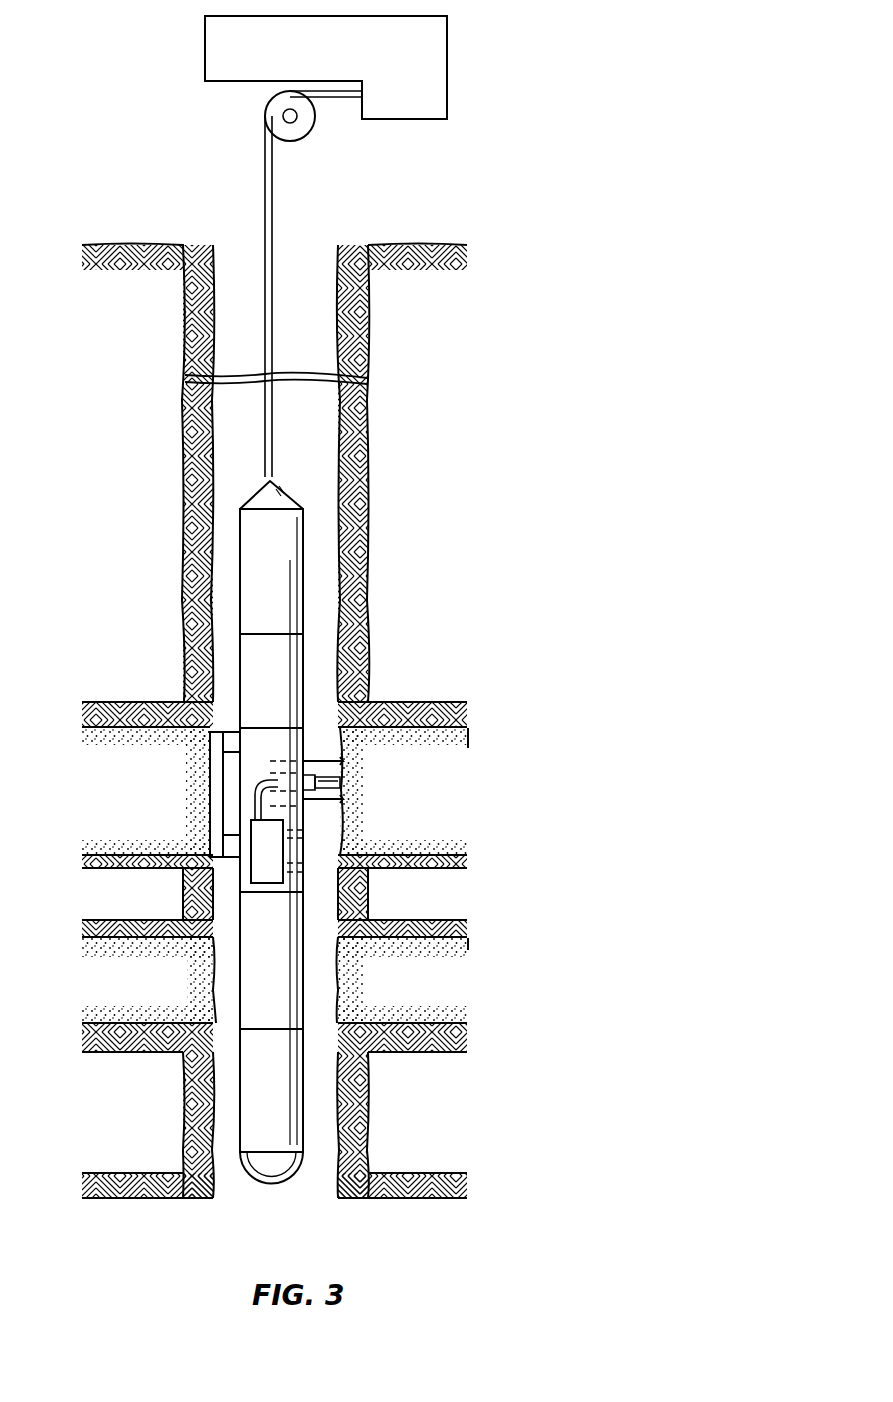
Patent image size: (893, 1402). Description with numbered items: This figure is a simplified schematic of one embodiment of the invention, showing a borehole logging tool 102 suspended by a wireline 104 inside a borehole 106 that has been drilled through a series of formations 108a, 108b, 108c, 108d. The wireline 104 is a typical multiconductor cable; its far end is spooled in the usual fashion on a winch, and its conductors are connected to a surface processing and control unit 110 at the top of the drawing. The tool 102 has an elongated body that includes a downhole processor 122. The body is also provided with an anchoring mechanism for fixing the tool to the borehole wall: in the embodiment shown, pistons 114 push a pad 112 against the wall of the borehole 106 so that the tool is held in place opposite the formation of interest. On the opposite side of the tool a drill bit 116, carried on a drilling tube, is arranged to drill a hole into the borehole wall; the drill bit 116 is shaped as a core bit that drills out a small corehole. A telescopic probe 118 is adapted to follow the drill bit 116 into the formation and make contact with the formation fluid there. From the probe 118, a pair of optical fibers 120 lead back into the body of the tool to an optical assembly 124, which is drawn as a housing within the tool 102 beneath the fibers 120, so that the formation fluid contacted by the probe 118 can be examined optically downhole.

The borehole logging tool 102 is at (347, 832).
The wireline 104 is at (265, 192).
The borehole 106 is at (330, 273).
The formation 108a is at (467, 553).
The formation 108b is at (453, 798).
The formation 108c is at (453, 909).
The formation 108d is at (453, 994).
The surface processing and control unit 110 is at (400, 119).
The pad 112 is at (217, 783).
The pistons 114 is at (232, 855).
The drill bit 116 is at (343, 762).
The telescopic probe 118 is at (343, 785).
The optical fibers 120 is at (257, 800).
The downhole processor 122 is at (280, 670).
The optical assembly 124 is at (270, 858).